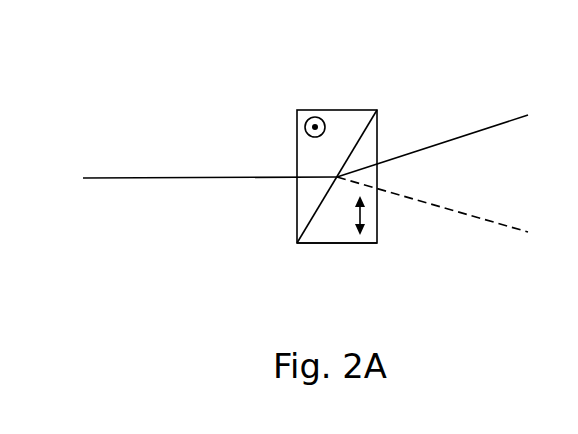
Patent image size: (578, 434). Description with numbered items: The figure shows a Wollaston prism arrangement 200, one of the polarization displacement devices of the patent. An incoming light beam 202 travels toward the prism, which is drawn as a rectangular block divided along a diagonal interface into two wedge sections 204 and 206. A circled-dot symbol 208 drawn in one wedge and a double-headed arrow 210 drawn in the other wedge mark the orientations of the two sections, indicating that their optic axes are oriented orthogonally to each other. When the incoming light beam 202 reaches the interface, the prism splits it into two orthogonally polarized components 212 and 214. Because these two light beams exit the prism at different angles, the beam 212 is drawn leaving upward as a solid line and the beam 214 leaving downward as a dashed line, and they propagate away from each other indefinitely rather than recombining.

The optical system 200 is at (184, 111).
The incoming light beam 202 is at (102, 190).
The first prism wedge / interface 204 is at (299, 215).
The second prism wedge 206 is at (318, 232).
The optic axis indicator (out of plane) 208 is at (302, 113).
The optic axis indicator (in plane) 210 is at (367, 218).
The orthogonally polarized component 212 is at (497, 115).
The orthogonally polarized component 214 is at (498, 235).